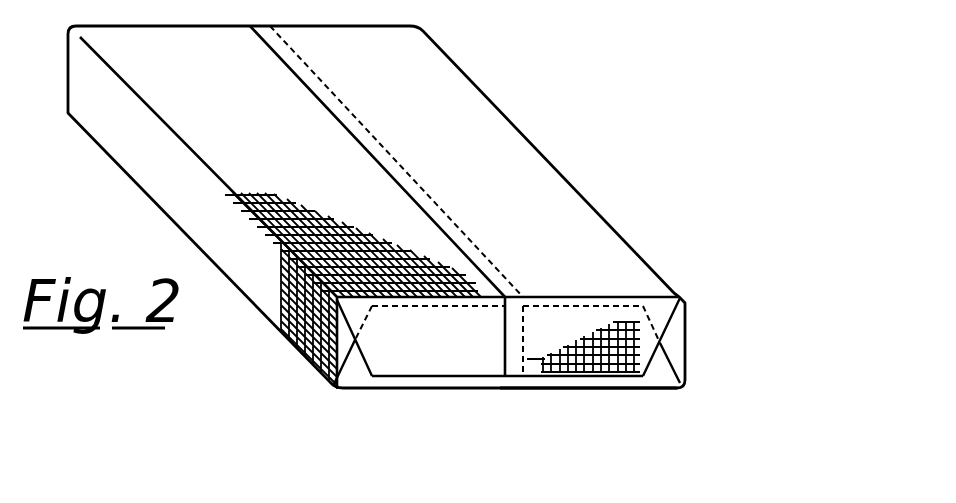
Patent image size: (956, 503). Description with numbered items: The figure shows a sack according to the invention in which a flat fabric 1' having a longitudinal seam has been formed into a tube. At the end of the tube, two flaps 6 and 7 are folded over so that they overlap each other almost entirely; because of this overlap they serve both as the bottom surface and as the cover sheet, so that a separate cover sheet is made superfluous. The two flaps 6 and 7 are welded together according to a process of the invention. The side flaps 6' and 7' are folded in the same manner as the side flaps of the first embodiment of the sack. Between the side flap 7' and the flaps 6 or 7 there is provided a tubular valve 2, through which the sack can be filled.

The flat fabric 1' is at (376, 207).
The tubular valve 2 is at (315, 350).
The flap 6 is at (583, 306).
The side flap 6' is at (689, 340).
The flap 7 is at (591, 415).
The side flap 7' is at (322, 373).